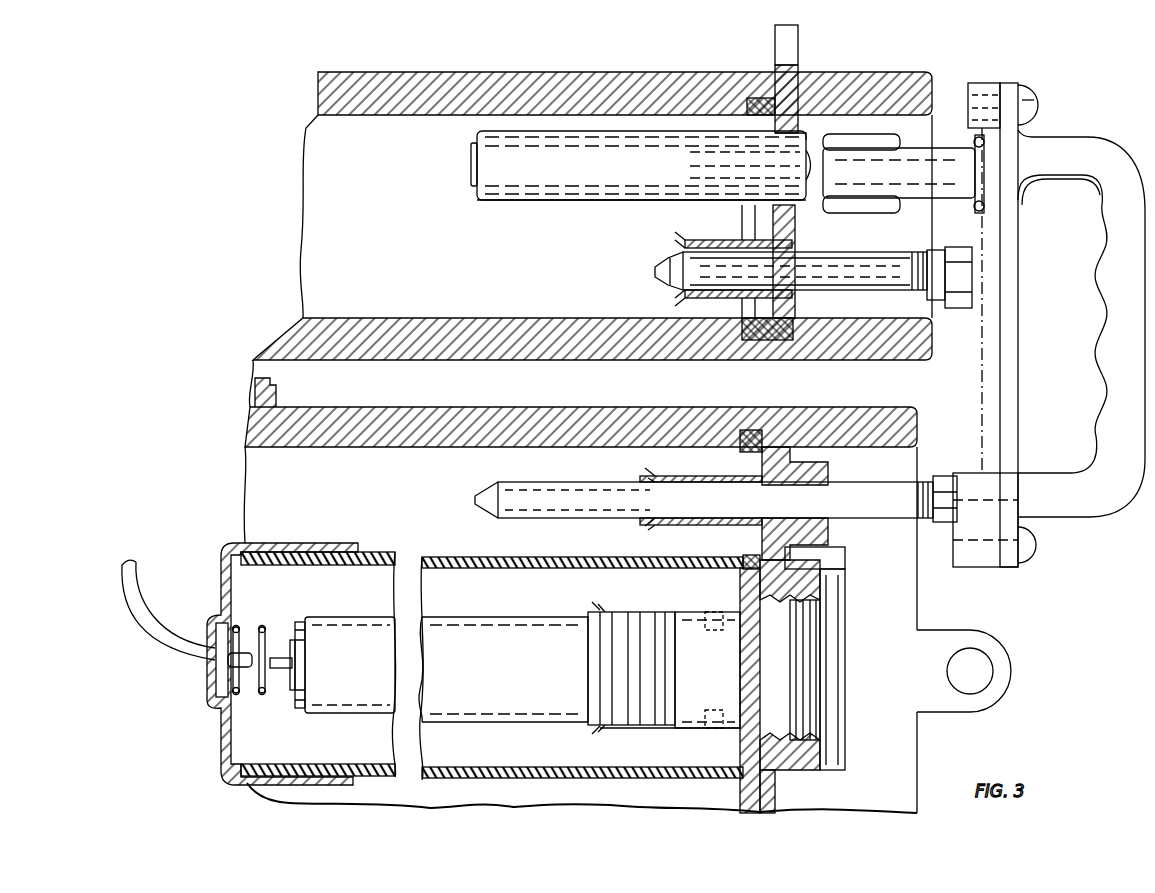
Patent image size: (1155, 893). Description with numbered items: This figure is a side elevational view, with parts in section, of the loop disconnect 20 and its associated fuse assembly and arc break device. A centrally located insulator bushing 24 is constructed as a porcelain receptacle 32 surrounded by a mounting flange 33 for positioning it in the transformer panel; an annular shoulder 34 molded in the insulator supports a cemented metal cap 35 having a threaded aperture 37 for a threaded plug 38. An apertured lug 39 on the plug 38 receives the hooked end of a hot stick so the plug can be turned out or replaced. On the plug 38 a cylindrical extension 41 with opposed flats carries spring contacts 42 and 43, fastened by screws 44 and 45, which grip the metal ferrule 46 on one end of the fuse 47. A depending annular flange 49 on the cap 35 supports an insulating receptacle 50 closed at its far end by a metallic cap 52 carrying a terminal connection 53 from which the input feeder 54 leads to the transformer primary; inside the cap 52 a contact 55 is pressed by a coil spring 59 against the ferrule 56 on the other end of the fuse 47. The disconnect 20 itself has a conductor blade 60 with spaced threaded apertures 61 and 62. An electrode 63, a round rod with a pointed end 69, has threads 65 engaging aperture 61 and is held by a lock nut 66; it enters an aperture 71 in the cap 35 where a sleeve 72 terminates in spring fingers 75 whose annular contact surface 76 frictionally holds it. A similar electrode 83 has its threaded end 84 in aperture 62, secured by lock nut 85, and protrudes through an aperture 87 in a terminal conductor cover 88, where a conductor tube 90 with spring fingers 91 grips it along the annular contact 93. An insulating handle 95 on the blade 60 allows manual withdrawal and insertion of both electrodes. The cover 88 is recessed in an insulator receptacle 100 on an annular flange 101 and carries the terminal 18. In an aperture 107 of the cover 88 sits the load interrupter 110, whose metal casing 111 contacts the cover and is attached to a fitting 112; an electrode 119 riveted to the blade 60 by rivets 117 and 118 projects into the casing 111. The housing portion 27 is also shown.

The terminal 18 is at (773, 35).
The disconnect 20 is at (1081, 123).
The insulator bushing 24 is at (920, 608).
The upper housing section 27 is at (928, 362).
The receptacle 32 is at (520, 407).
The mounting flange 33 is at (276, 382).
The annular shoulder 34 is at (738, 440).
The metal cap 35 is at (775, 800).
The threaded aperture 37 is at (820, 610).
The threaded plug 38 is at (845, 740).
The apertured lug 39 is at (950, 716).
The cylindrical extension 41 is at (716, 670).
The spring contact 42 is at (650, 612).
The spring contact 43 is at (665, 735).
The screw 44 is at (715, 612).
The screw 45 is at (705, 780).
The metal ferrule 46 is at (640, 712).
The fuse 47 is at (510, 667).
The depending annular flange 49 is at (740, 560).
The insulating receptacle 50 is at (540, 540).
The metallic cap 52 is at (320, 543).
The terminal connection 53 is at (215, 675).
The input feeder 54 is at (148, 612).
The contact 55 is at (298, 672).
The metal ferrule 56 is at (305, 640).
The coil spring 59 is at (262, 627).
The conductor blade 60 is at (1004, 340).
The threaded aperture 61 is at (985, 520).
The threaded aperture 62 is at (1000, 280).
The electrode 63 is at (870, 498).
The threads 65 is at (912, 522).
The lock nut 66 is at (945, 476).
The pointed end 69 is at (475, 500).
The aperture 71 is at (828, 475).
The sleeve 72 is at (828, 538).
The spring fingers 75 is at (700, 465).
The annular contact surface 76 is at (660, 478).
The electrode 83 is at (860, 270).
The threaded end 84 is at (915, 295).
The lock nut 85 is at (958, 310).
The aperture 87 is at (796, 250).
The terminal conductor cover 88 is at (793, 330).
The conductor tube 90 is at (792, 298).
The spring fingers 91 is at (700, 240).
The annular contact 93 is at (668, 262).
The handle 95 is at (1108, 372).
The insulator receptacle 100 is at (480, 72).
The annular flange 101 is at (750, 97).
The aperture 107 is at (803, 128).
The load interrupter 110 is at (616, 170).
The metal casing 111 is at (562, 210).
The fitting 112 is at (865, 130).
The rivet 117 is at (973, 142).
The rivet 118 is at (973, 208).
The electrode 119 is at (695, 175).